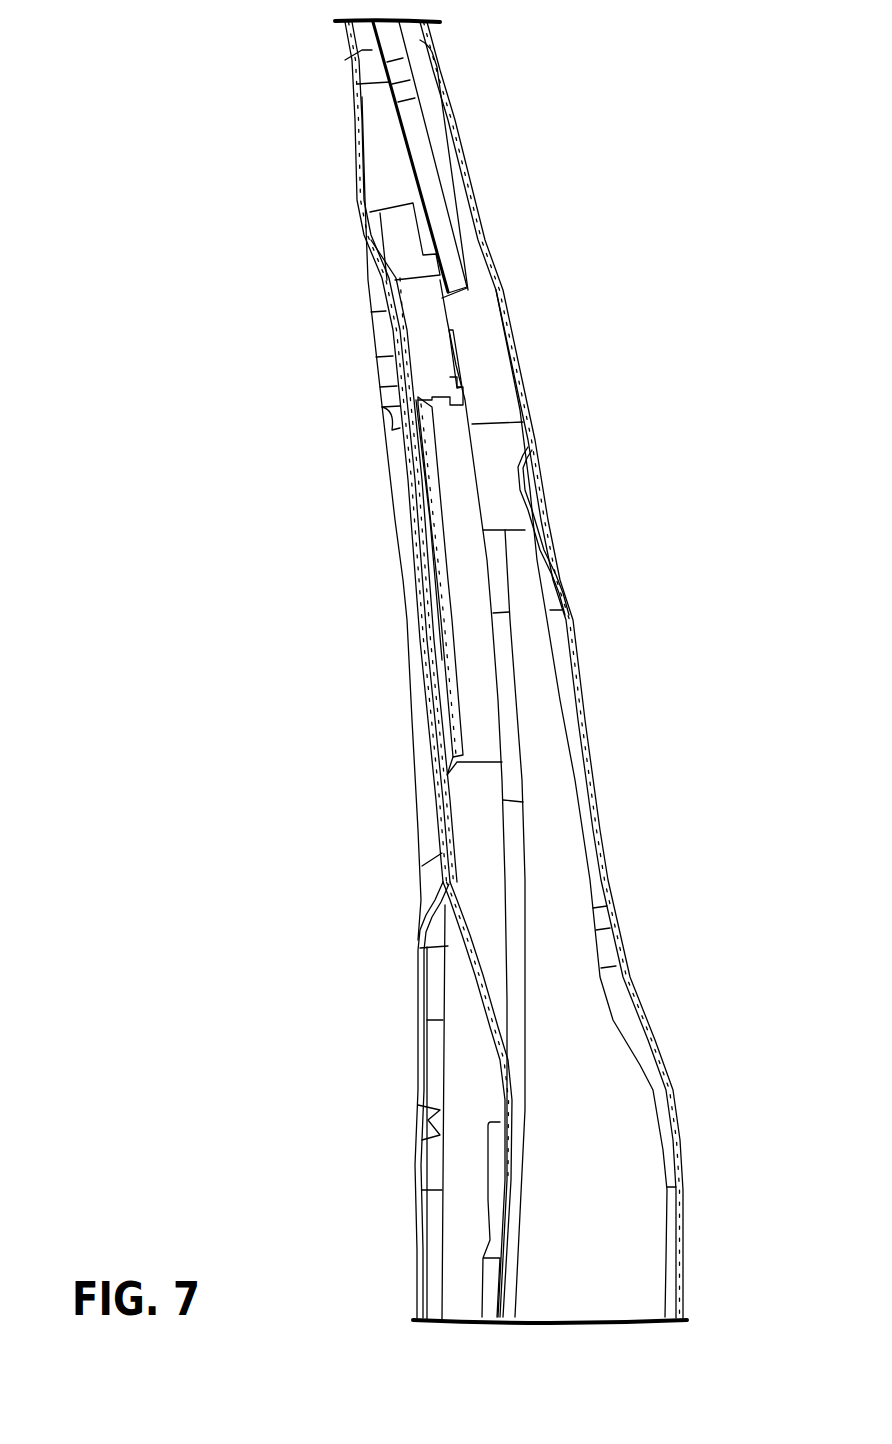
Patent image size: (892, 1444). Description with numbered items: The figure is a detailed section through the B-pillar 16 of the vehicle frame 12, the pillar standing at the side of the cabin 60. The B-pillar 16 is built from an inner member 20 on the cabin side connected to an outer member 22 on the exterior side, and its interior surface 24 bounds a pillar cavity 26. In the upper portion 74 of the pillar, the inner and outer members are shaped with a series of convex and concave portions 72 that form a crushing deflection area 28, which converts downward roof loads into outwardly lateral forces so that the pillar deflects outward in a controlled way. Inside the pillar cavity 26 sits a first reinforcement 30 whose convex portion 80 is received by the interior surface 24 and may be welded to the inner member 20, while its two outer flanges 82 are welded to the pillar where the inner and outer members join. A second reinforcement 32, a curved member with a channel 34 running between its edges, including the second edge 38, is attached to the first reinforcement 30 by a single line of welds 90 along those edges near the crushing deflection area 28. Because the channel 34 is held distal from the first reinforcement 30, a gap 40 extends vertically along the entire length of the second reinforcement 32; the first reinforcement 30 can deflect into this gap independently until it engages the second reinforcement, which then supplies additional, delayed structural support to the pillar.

The frame 12 is at (605, 205).
The B-pillar 16 is at (680, 873).
The inner member 20 is at (353, 157).
The outer member 22 is at (477, 175).
The interior surface 24 is at (432, 52).
The pillar cavity 26 is at (402, 185).
The crushing deflection area 28 is at (403, 592).
The first reinforcement 30 is at (407, 333).
The second reinforcement 32 is at (437, 468).
The channel 34 is at (457, 655).
The second edge 38 is at (475, 720).
The gap 40 is at (433, 583).
The cabin 60 is at (341, 872).
The convex and concave portions 72 is at (383, 353).
The upper portion 74 is at (355, 222).
The convex portion 80 is at (407, 362).
The outer flanges 82 is at (442, 296).
The welds 90 is at (483, 508).